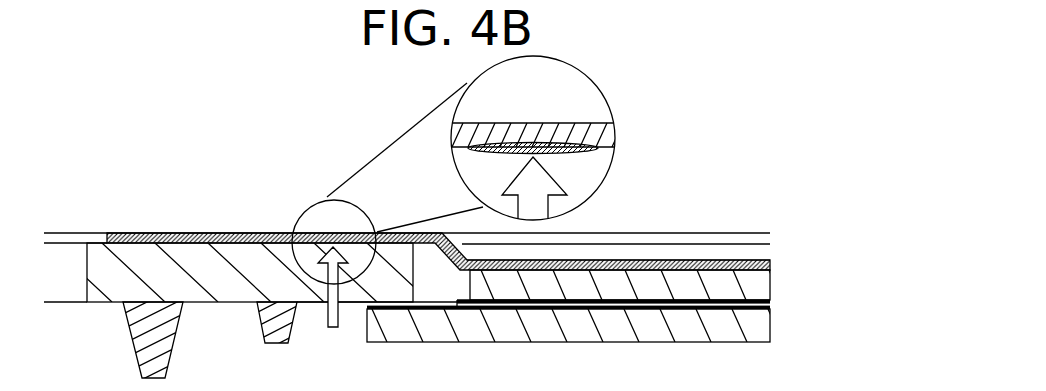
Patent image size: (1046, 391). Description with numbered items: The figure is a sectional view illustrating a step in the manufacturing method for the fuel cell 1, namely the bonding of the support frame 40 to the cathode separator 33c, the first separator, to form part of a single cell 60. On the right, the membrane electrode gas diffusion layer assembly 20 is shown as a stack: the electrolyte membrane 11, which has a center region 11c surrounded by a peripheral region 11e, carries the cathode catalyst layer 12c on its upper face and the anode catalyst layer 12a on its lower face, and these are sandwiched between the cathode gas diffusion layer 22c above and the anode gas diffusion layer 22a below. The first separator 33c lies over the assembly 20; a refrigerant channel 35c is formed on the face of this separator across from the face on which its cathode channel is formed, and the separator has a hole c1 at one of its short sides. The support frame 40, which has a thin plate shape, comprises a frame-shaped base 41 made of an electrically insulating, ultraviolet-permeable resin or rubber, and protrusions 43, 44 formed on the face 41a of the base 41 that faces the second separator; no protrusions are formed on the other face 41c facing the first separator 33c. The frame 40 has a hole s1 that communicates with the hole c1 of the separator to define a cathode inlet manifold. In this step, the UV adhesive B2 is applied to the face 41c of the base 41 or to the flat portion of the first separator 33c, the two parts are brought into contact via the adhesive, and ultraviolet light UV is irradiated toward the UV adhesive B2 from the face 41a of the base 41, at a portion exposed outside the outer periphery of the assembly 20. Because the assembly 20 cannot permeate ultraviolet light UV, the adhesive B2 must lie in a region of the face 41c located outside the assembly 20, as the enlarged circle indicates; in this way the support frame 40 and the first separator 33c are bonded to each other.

The fuel cell 1 is at (752, 187).
The single cell 60 is at (770, 228).
The cathode separator 33c is at (772, 238).
The refrigerant channel 35c is at (688, 250).
The membrane electrode gas diffusion layer assembly 20 is at (855, 253).
The cathode gas diffusion layer 22c is at (762, 280).
The electrolyte membrane 11 is at (770, 305).
The center region 11c is at (635, 297).
The peripheral region 11e is at (440, 310).
The cathode catalyst layer 12c is at (762, 301).
The anode catalyst layer 12a is at (762, 309).
The anode gas diffusion layer 22a is at (765, 333).
The support frame 40 is at (89, 304).
The base 41 is at (110, 293).
The face 41a is at (300, 305).
The face 41c is at (225, 233).
The protrusion 43 is at (168, 320).
The protrusion 44 is at (267, 337).
The hole c1 is at (63, 238).
The hole s1 is at (55, 293).
The UV adhesive B2 is at (598, 145).
The ultraviolet light UV is at (336, 300).